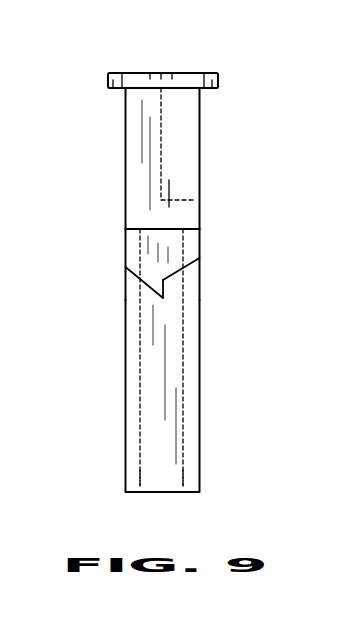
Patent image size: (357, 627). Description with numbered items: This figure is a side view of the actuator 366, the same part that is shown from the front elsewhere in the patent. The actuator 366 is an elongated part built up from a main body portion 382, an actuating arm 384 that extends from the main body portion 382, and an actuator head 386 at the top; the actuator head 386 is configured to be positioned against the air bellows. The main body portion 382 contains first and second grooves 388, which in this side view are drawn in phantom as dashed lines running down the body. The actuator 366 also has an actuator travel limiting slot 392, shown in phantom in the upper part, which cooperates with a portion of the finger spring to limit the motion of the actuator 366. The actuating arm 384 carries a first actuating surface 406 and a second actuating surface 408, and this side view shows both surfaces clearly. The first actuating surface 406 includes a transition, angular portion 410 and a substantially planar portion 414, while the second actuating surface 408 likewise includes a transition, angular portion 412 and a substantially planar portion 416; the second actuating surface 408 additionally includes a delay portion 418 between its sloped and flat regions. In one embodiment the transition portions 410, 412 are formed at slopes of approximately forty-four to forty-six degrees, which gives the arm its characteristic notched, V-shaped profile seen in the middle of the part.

The actuator 366 is at (203, 178).
The main body portion 382 is at (187, 431).
The actuating arm 384 is at (124, 236).
The actuator head 386 is at (177, 82).
The grooves 388 is at (184, 373).
The actuator travel limiting slot 392 is at (161, 151).
The first actuating surface 406 is at (124, 267).
The second actuating surface 408 is at (204, 256).
The transition portion 410 is at (147, 286).
The transition portion 412 is at (174, 274).
The planar portion 414 is at (125, 262).
The planar portion 416 is at (200, 240).
The delay portion 418 is at (165, 287).